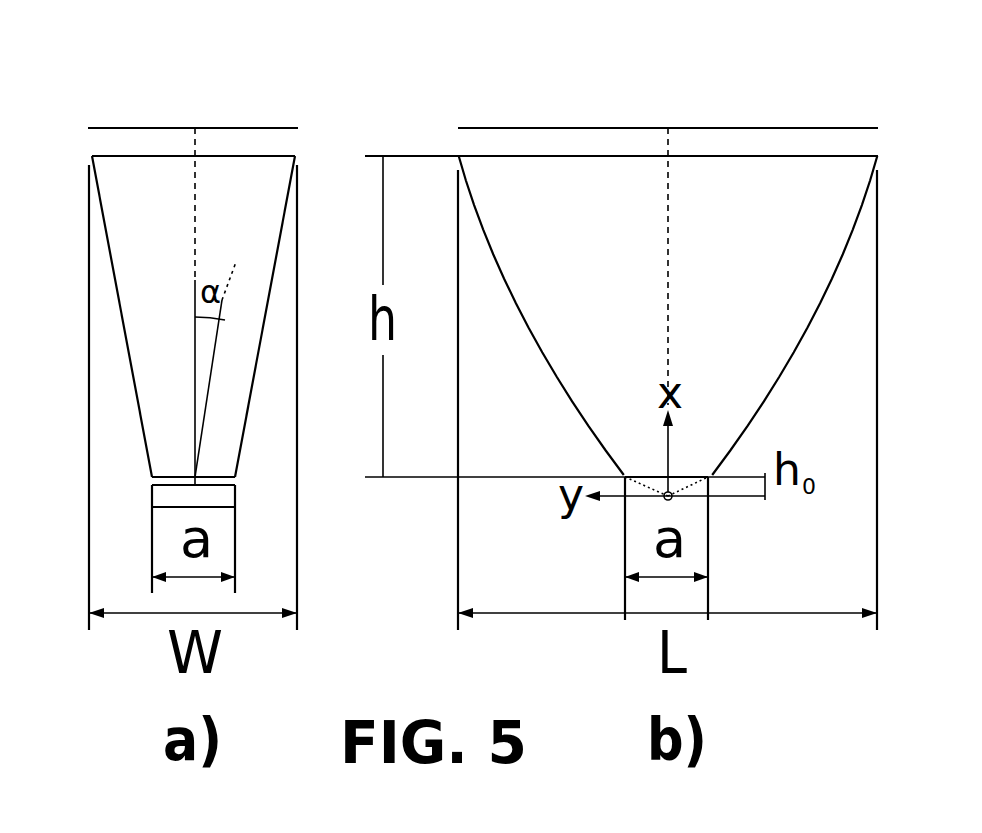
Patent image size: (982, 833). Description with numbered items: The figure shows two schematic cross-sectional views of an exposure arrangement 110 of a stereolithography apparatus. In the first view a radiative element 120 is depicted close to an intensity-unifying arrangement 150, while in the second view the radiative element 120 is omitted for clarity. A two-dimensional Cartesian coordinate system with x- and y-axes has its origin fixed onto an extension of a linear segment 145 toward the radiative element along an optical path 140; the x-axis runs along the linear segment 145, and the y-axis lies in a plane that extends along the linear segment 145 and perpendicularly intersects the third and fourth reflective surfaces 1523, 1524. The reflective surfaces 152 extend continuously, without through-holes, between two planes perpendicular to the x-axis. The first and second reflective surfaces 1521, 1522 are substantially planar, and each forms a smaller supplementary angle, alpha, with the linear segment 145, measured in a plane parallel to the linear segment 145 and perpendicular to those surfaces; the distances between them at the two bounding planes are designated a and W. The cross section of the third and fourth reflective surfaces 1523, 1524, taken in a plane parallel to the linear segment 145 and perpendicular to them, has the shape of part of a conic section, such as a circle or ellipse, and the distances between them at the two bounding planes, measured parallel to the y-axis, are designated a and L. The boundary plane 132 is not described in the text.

The exposure arrangement 110 is at (766, 92).
The radiative element 120 is at (235, 492).
The aperture plane 132 is at (275, 128).
The optical path 140 is at (193, 141).
The linear segment 145 is at (668, 330).
The intensity-unifying arrangement 150 is at (525, 156).
The reflective surfaces 152 is at (484, 316).
The first reflective surface 1521 is at (147, 222).
The second reflective surface 1522 is at (279, 240).
The third reflective surface 1523 is at (499, 268).
The fourth reflective surface 1524 is at (858, 210).